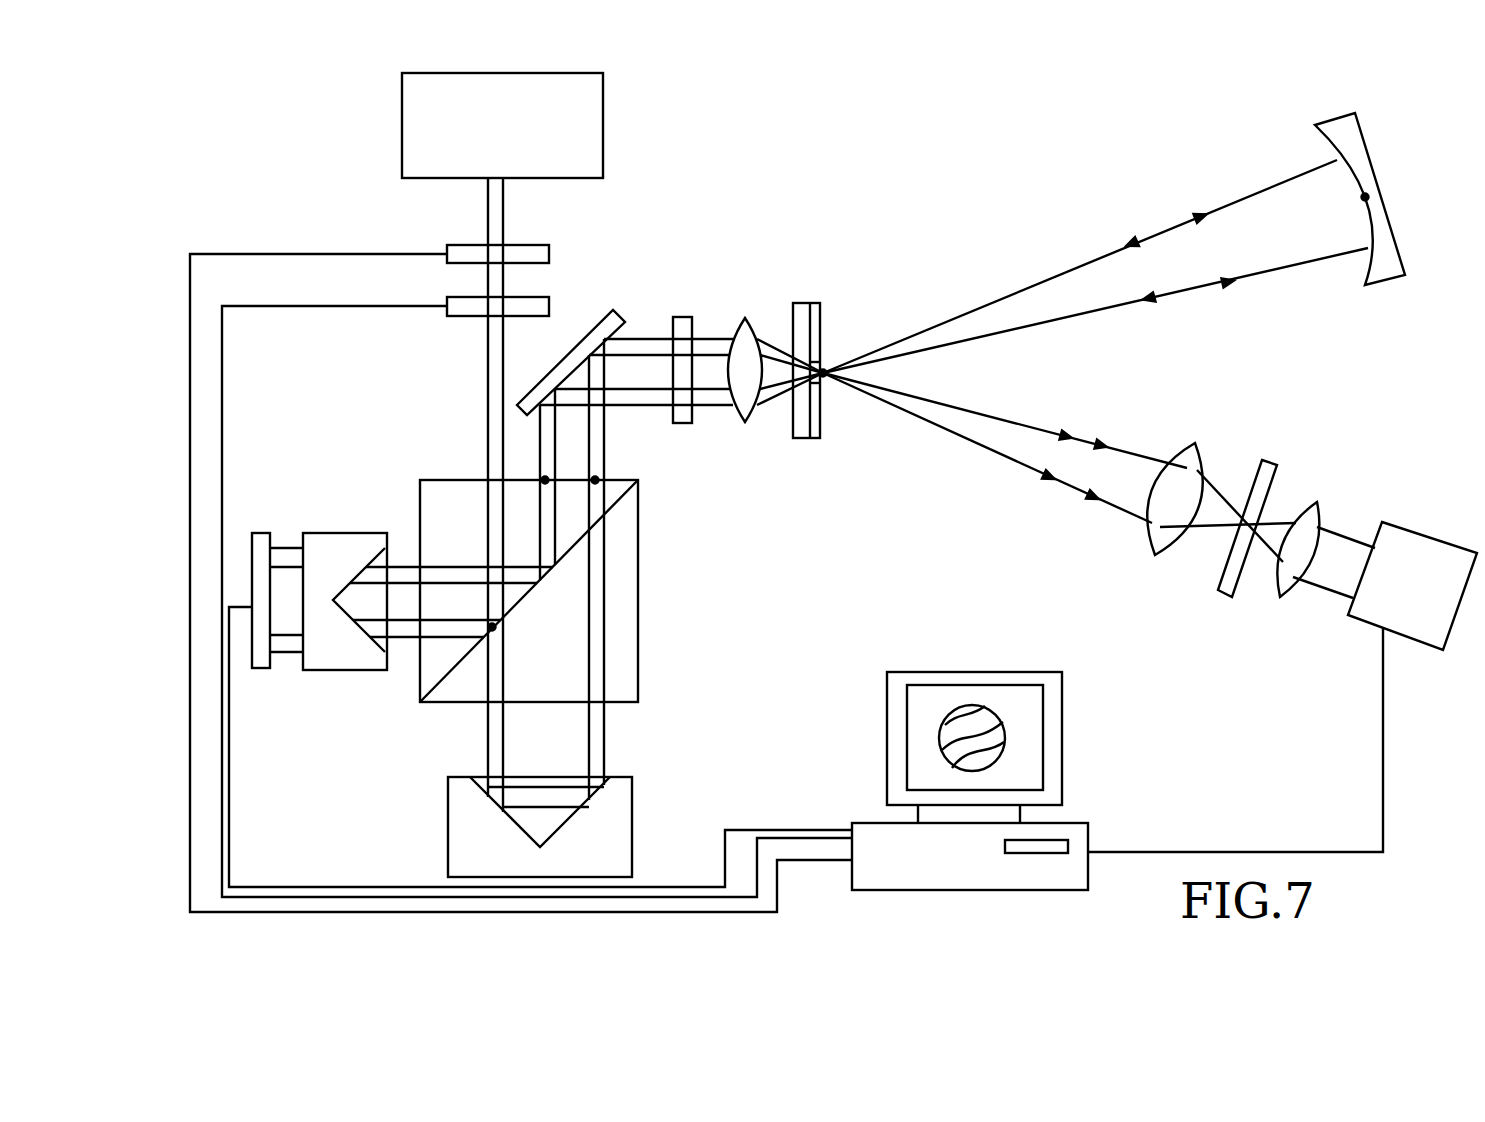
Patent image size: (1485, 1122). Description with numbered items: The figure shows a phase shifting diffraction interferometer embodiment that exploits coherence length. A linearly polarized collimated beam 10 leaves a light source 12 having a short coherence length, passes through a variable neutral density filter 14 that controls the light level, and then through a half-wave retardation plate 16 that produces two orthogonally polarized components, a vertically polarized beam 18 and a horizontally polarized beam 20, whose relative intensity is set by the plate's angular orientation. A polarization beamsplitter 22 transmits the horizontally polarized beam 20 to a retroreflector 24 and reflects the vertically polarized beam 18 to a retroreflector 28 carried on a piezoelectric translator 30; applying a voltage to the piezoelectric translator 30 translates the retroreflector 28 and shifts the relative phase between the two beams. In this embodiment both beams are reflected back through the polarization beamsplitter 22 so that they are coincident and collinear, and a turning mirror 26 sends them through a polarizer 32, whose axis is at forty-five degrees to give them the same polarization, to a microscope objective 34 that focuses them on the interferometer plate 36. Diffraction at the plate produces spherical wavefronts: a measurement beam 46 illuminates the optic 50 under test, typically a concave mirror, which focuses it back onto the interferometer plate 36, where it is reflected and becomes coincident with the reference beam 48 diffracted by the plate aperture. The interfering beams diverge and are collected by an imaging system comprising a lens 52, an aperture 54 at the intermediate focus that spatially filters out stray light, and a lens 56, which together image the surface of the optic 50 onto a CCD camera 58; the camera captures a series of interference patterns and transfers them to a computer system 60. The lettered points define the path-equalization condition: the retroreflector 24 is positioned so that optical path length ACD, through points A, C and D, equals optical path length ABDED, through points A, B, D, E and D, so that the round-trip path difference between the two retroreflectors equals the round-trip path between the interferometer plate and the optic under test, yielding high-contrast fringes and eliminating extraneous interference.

The collimated beam 10 is at (488, 213).
The light source 12 is at (603, 130).
The variable neutral density filter 14 is at (549, 254).
The half-wave retardation plate 16 is at (549, 306).
The beam 18 is at (407, 640).
The beam 20 is at (487, 742).
The polarization beamsplitter 22 is at (638, 557).
The retroreflector 24 is at (633, 797).
The turning mirror 26 is at (615, 312).
The retroreflector 28 is at (345, 533).
The piezoelectric translator 30 is at (262, 533).
The polarizer 32 is at (683, 423).
The microscope objective 34 is at (745, 318).
The interferometer plate 36 is at (805, 303).
The measurement beam 46 is at (1027, 287).
The reference beam 48 is at (1030, 427).
The optic under test 50 is at (1360, 226).
The lens 52 is at (1150, 530).
The aperture 54 is at (1270, 462).
The lens 56 is at (1280, 577).
The CCD camera 58 is at (1418, 527).
The computer system 60 is at (1090, 832).
The point A is at (494, 628).
The point B is at (547, 480).
The point C is at (597, 480).
The point D is at (827, 370).
The point E is at (1363, 198).